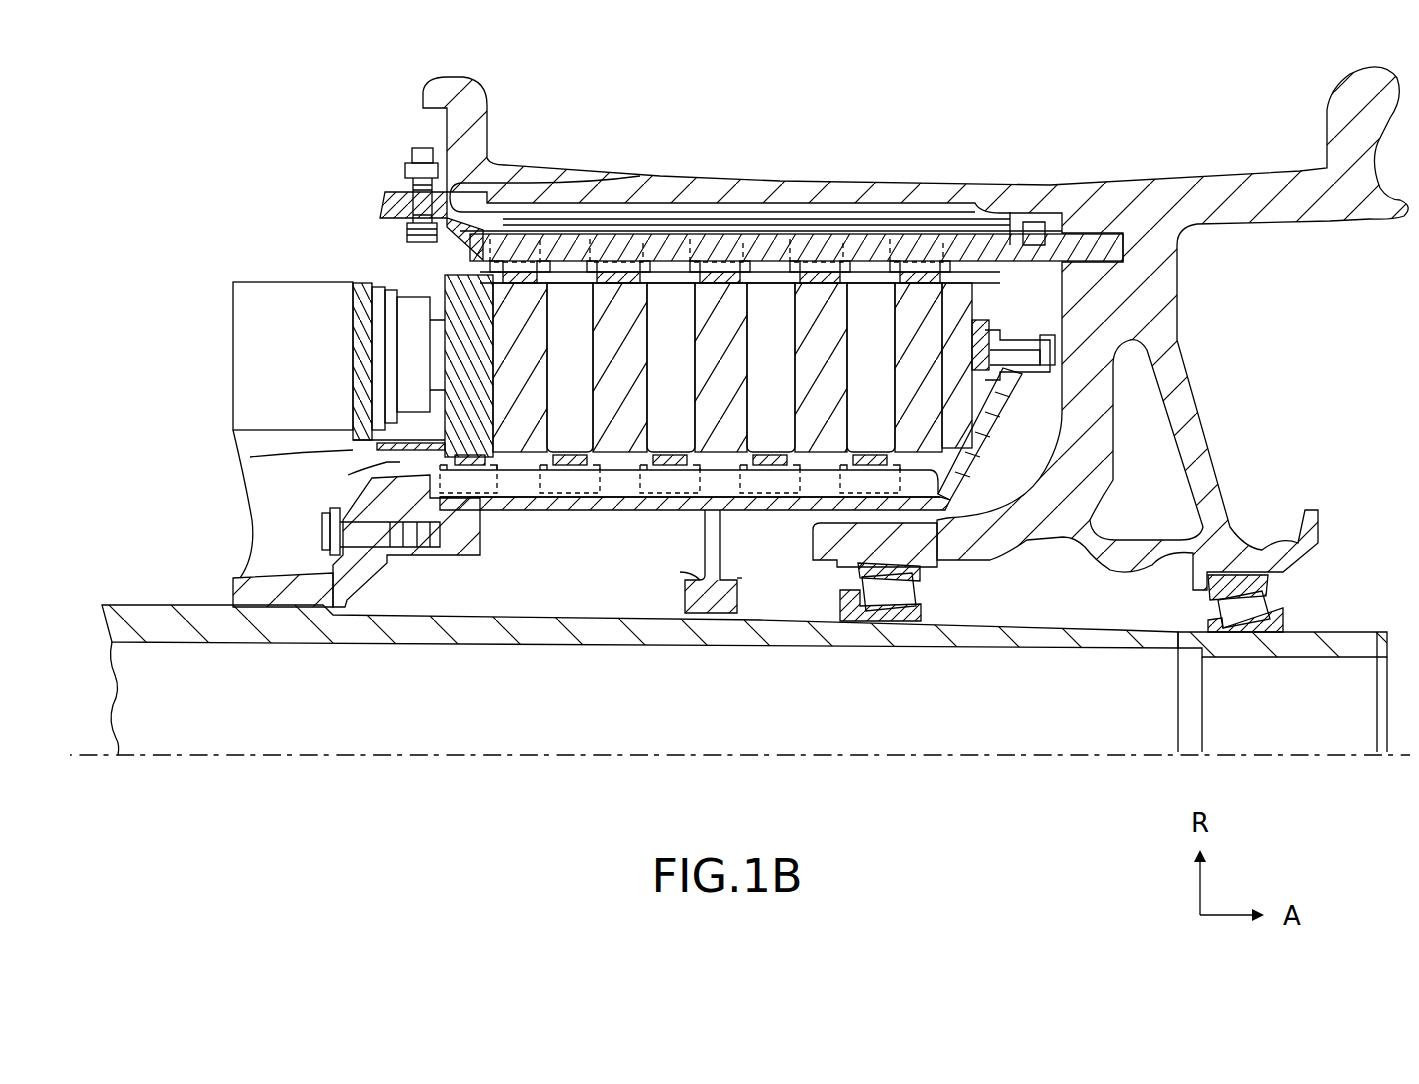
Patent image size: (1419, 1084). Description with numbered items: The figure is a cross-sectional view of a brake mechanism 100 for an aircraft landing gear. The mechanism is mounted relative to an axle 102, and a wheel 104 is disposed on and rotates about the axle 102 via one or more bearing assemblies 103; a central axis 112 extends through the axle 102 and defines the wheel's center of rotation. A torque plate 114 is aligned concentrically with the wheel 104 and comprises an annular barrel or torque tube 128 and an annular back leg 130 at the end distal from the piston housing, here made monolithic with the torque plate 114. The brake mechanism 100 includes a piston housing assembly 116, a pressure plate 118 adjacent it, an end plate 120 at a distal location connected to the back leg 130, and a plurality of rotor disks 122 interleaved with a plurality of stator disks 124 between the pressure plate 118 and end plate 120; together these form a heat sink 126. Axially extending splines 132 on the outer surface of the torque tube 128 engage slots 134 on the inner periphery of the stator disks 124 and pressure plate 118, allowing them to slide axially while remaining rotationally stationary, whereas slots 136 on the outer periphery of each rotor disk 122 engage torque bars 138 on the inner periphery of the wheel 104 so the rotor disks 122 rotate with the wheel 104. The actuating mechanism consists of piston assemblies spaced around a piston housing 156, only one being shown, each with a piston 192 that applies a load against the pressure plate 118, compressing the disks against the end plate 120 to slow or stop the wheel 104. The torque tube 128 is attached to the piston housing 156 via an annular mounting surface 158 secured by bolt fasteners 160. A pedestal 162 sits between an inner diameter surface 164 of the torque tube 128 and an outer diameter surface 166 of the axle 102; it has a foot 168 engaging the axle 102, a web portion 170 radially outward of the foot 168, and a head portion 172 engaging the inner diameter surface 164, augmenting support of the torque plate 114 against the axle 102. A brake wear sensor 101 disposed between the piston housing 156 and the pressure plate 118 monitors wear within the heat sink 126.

The brake mechanism 100 is at (238, 148).
The brake wear sensor 101 is at (290, 455).
The axle 102 is at (1037, 646).
The bearing assemblies 103 is at (1266, 600).
The wheel 104 is at (1198, 338).
The central axis 112 is at (995, 755).
The torque plate 114 is at (548, 518).
The piston housing assembly 116 is at (322, 258).
The pressure plate 118 is at (445, 277).
The end plate 120 is at (968, 290).
The rotor disks 122 is at (527, 292).
The stator disks 124 is at (675, 290).
The heat sink 126 is at (830, 290).
The torque tube 128 is at (502, 510).
The back leg 130 is at (988, 418).
The splines 132 is at (440, 465).
The slots 134 is at (848, 490).
The slots 136 is at (600, 250).
The torque bars 138 is at (978, 250).
The piston housing 156 is at (233, 288).
The annular mounting surface 158 is at (433, 560).
The bolt fasteners 160 is at (322, 532).
The pedestal 162 is at (694, 542).
The inner diameter surface 164 is at (590, 512).
The outer diameter surface 166 is at (742, 612).
The foot 168 is at (738, 578).
The web portion 170 is at (707, 560).
The head portion 172 is at (706, 508).
The piston 192 is at (437, 368).